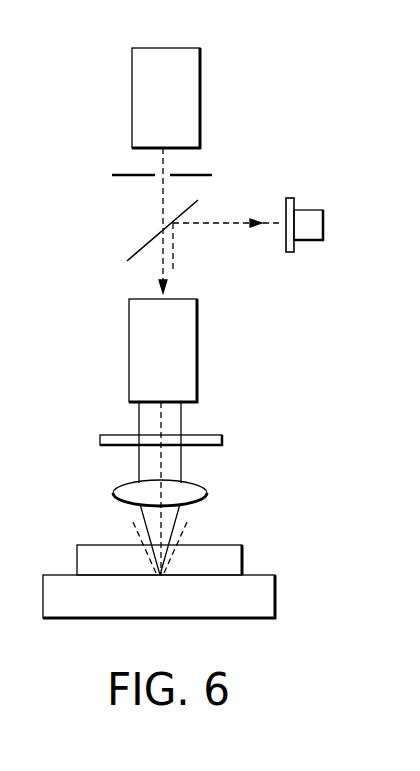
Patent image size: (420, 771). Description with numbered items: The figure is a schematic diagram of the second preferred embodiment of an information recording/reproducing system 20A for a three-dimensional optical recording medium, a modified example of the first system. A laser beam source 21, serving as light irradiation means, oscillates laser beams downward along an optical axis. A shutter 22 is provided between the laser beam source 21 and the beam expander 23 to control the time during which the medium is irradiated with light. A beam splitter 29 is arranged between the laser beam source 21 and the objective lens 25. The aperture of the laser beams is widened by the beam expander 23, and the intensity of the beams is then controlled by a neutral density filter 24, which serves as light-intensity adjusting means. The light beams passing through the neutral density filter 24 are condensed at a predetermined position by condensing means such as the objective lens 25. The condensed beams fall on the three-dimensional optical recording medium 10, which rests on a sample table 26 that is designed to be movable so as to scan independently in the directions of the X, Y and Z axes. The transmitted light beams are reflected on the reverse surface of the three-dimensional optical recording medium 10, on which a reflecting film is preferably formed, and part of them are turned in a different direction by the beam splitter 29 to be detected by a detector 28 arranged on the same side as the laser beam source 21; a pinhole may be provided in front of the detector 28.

The information recording/reproducing system 20A is at (281, 92).
The laser beam source 21 is at (200, 77).
The shutter 22 is at (200, 175).
The beam splitter 29 is at (142, 243).
The detector 28 is at (308, 210).
The beam expander 23 is at (197, 333).
The neutral density filter 24 is at (218, 437).
The objective lens 25 is at (202, 487).
The three-dimensional optical recording medium 10 is at (233, 563).
The sample table 26 is at (275, 600).